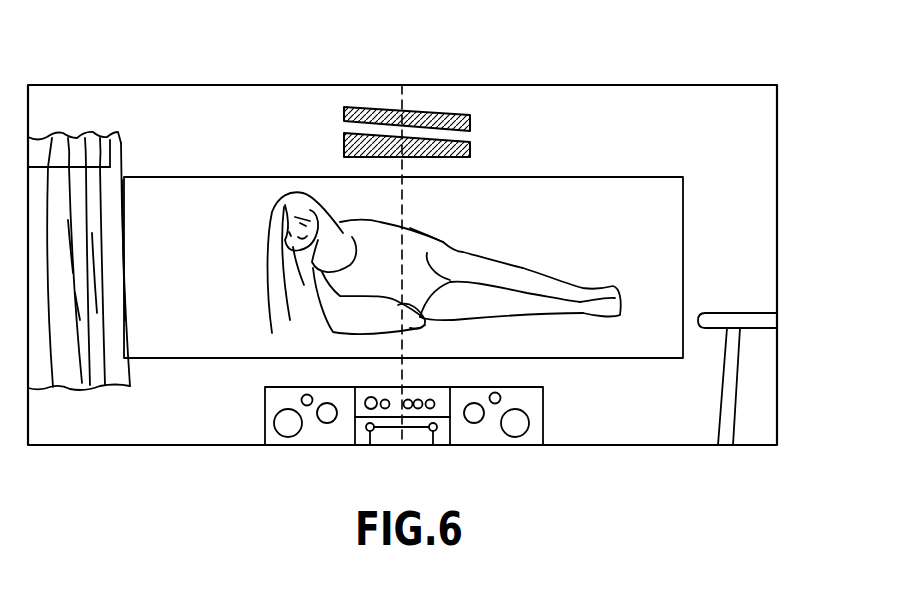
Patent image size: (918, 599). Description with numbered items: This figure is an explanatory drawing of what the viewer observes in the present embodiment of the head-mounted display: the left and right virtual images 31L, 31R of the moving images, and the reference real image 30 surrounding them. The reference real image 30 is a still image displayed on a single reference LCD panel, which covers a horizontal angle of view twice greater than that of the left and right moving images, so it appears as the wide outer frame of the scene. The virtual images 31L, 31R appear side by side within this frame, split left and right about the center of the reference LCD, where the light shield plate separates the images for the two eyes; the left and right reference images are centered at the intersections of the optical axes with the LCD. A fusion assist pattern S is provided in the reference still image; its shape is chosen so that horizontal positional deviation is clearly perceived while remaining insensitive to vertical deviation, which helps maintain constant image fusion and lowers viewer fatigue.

The reference real image 30 is at (770, 82).
The left virtual image 31L is at (190, 177).
The right virtual image 31R is at (553, 176).
The fusion assist pattern S is at (384, 107).